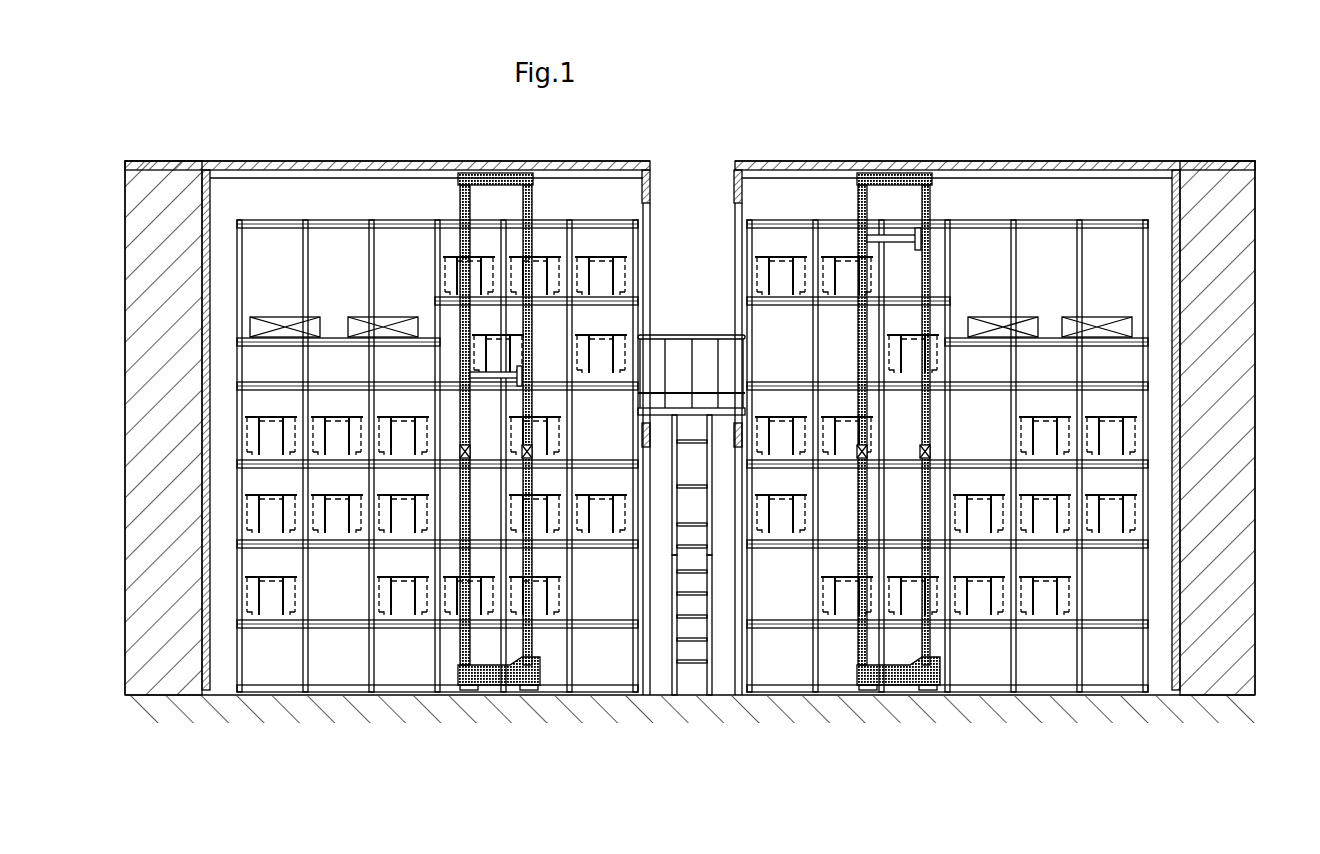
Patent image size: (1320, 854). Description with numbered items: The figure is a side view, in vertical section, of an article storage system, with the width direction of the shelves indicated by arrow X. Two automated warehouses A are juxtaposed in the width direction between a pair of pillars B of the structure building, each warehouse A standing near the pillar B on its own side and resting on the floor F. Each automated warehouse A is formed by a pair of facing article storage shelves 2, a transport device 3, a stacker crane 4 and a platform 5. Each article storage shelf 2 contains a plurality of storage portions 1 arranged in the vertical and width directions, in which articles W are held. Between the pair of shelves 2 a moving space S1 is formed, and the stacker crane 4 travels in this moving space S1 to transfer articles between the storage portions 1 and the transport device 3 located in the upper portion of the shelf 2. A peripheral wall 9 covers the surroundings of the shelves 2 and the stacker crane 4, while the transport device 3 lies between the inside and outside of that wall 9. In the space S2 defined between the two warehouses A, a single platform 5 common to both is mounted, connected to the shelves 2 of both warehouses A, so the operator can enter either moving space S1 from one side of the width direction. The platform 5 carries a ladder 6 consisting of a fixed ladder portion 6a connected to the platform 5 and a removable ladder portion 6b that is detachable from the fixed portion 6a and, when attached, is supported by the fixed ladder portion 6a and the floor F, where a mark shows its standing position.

The storage portion 1 is at (352, 560).
The article storage shelf 2 is at (687, 436).
The transport device 3 is at (287, 318).
The stacker crane 4 is at (456, 194).
The platform 5 is at (683, 335).
The ladder 6 is at (689, 548).
The fixed ladder portion 6a is at (670, 455).
The removable ladder portion 6b is at (710, 588).
The peripheral wall 9 is at (400, 162).
The automated warehouse A is at (313, 140).
The pillar B is at (153, 162).
The floor F is at (157, 690).
The article (container) W is at (553, 578).
The width direction X is at (597, 122).
The moving space S1 is at (323, 216).
The intermediate space S2 is at (678, 230).